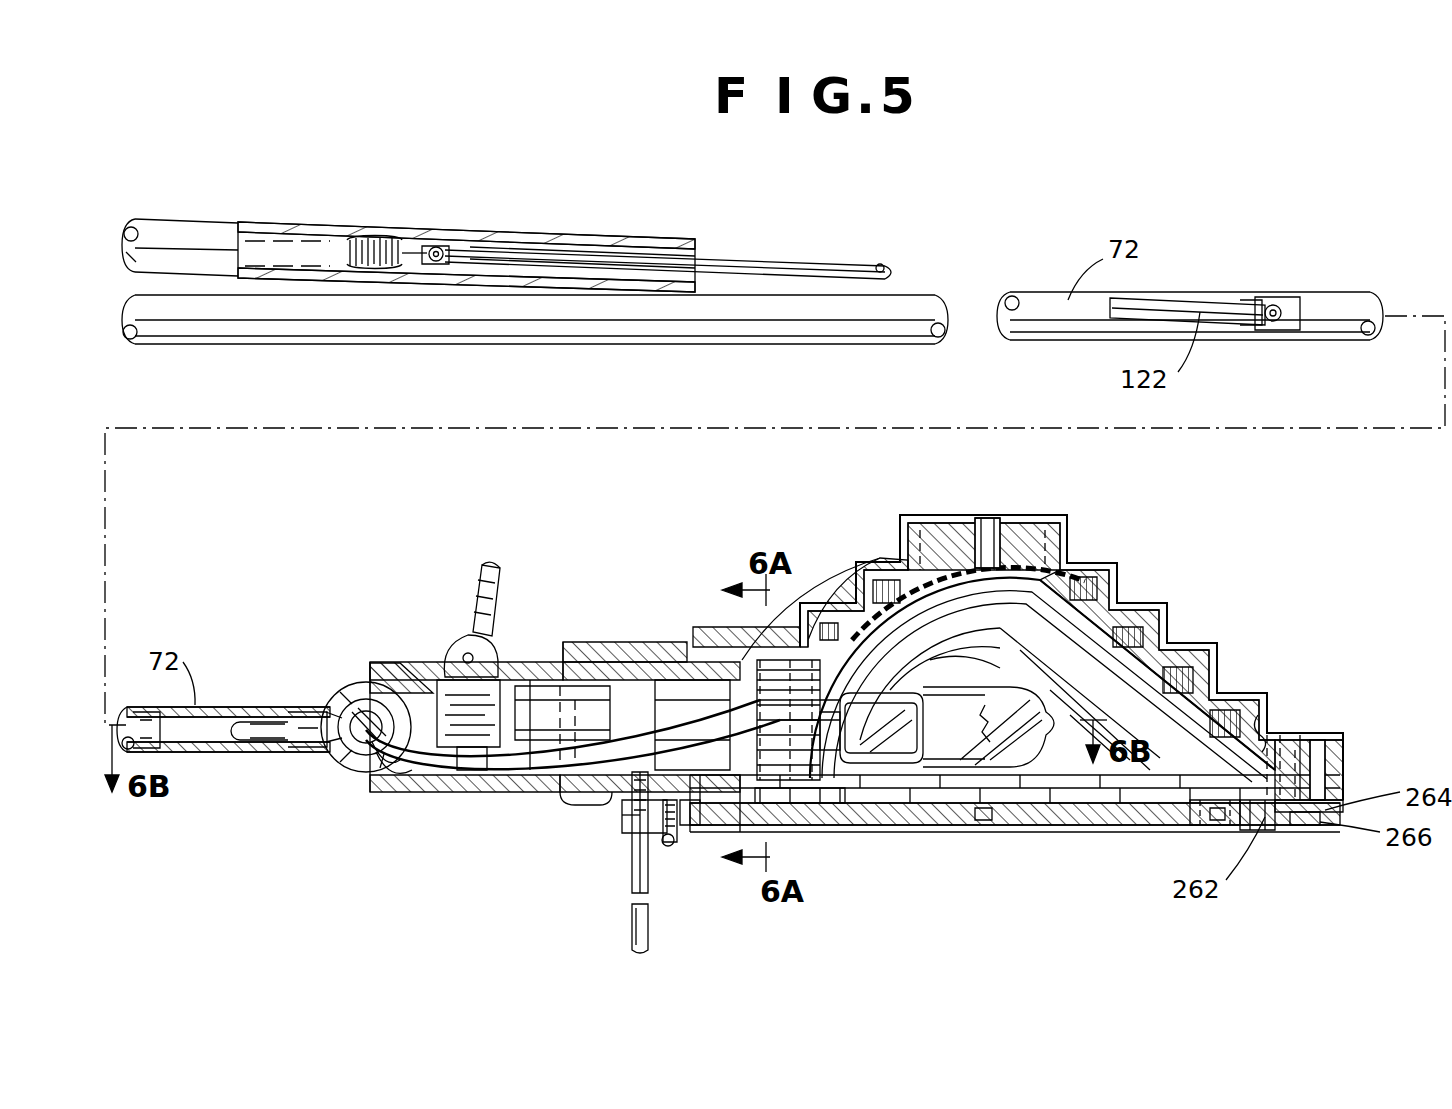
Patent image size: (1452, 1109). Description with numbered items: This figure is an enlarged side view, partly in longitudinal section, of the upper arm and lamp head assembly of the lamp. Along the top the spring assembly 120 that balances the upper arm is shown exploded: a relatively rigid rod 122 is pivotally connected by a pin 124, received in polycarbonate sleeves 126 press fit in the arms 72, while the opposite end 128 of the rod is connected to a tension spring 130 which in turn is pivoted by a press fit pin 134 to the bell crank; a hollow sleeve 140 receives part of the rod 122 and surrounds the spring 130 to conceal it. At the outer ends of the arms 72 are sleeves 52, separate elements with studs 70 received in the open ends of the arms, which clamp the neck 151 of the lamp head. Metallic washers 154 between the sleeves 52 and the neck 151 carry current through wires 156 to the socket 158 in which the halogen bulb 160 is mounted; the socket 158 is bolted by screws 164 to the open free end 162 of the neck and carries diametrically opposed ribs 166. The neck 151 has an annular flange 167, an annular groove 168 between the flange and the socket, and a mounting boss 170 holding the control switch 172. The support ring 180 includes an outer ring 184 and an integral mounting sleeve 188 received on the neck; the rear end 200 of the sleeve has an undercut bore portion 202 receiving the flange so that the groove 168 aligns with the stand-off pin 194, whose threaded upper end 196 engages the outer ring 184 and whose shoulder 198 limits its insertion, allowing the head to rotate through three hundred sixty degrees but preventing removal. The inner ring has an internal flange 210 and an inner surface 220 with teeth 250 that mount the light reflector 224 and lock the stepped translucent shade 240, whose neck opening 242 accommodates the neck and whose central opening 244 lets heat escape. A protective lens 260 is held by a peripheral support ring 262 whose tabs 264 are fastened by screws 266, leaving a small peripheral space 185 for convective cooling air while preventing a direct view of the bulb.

The sleeve 52 is at (337, 690).
The stud 70 is at (255, 740).
The arm 72 is at (832, 332).
The spring assembly 120 is at (308, 222).
The rod 122 is at (728, 262).
The pin 124 is at (1283, 300).
The polycarbonate sleeve 126 is at (1252, 293).
The opposite end of rod 128 is at (520, 258).
The tension spring 130 is at (385, 240).
The press fit pin 134 is at (442, 240).
The hollow sleeve 140 is at (196, 225).
The neck 151 is at (385, 792).
The metallic washer 154 is at (335, 768).
The wire 156 is at (535, 778).
The socket 158 is at (832, 700).
The halogen bulb 160 is at (902, 772).
The open free end of neck 162 is at (760, 668).
The screw 164 is at (820, 772).
The rib 166 is at (800, 835).
The annular flange 167 is at (552, 795).
The annular groove 168 is at (628, 662).
The mounting boss 170 is at (445, 663).
The control switch 172 is at (475, 605).
The support ring 180 is at (1345, 735).
The outer ring 184 is at (1330, 802).
The peripheral space 185 is at (1283, 830).
The mounting sleeve 188 is at (605, 640).
The stand-off pin 194 is at (630, 928).
The threaded upper end 196 is at (616, 804).
The shoulder 198 is at (618, 820).
The rear end of sleeve 200 is at (562, 650).
The undercut bore portion 202 is at (535, 655).
The internal flange 210 is at (1195, 806).
The inner surface of inner ring 220 is at (1290, 760).
The light reflector 224 is at (1135, 617).
The shade 240 is at (1095, 555).
The neck opening 242 is at (790, 630).
The central opening 244 is at (985, 525).
The tooth 250 is at (1266, 712).
The protective lens 260 is at (945, 826).
The peripheral support ring 262 is at (672, 840).
The tab 264 is at (662, 855).
The screw 266 is at (668, 852).